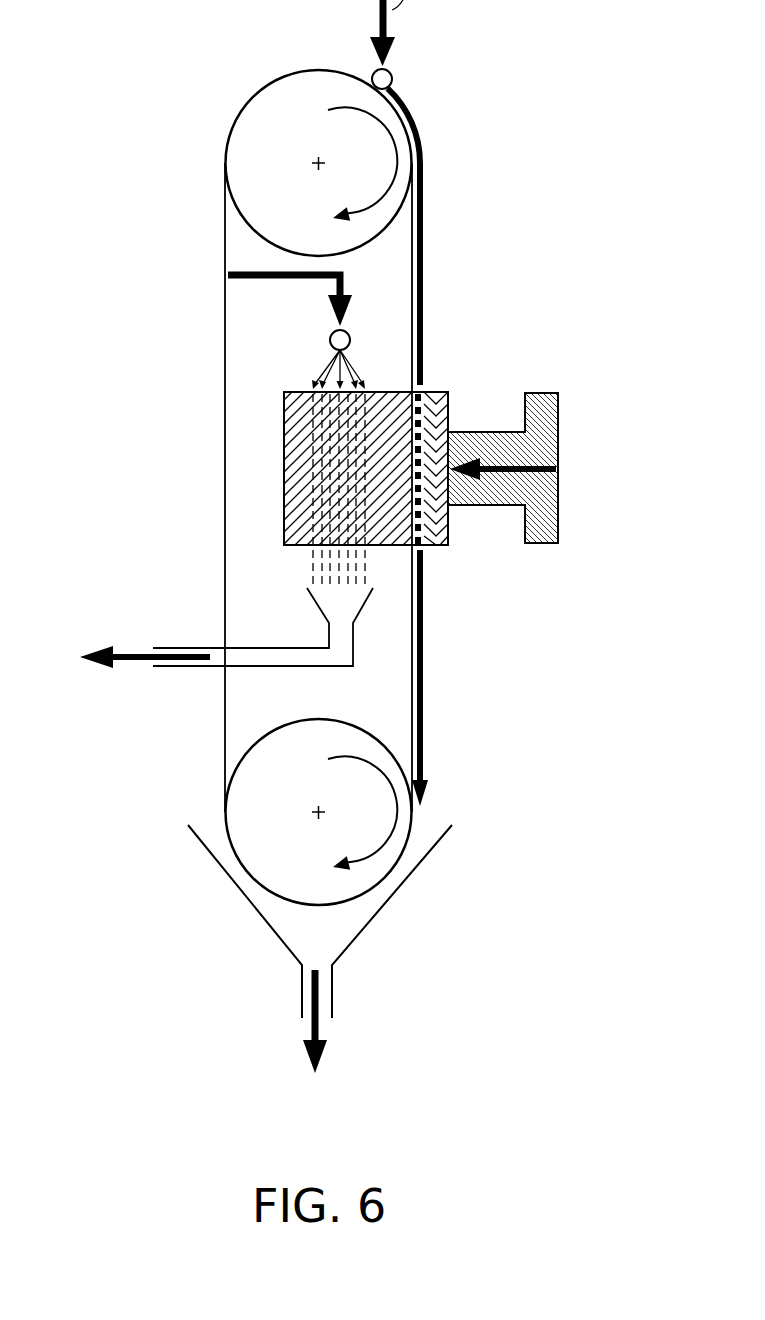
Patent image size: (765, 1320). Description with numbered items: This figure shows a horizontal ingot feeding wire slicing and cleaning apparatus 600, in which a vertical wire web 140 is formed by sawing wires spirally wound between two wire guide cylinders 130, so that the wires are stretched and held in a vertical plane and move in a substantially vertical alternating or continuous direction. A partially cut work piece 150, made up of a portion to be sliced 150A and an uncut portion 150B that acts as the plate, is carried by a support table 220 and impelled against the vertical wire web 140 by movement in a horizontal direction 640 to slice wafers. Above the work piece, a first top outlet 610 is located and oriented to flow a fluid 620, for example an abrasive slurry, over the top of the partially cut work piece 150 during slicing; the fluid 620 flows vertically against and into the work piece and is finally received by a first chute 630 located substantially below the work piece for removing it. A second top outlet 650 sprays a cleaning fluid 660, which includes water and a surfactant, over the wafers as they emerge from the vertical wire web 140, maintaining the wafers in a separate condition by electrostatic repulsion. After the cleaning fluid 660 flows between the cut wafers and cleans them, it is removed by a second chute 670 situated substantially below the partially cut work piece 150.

The wire guide cylinder 130 is at (237, 142).
The vertical wire web 140 is at (225, 410).
The partially cut work piece 150 is at (378, 437).
The portion to be sliced 150A is at (303, 402).
The uncut portion 150B is at (437, 535).
The support table 220 is at (560, 412).
The horizontal ingot feeding wire slicing and cleaning apparatus 600 is at (411, 1092).
The first top outlet 610 is at (393, 80).
The fluid 620 is at (423, 308).
The first chute 630 is at (410, 877).
The horizontal direction 640 is at (558, 463).
The second top outlet 650 is at (332, 338).
The cleaning fluid 660 is at (228, 276).
The second chute 670 is at (318, 610).